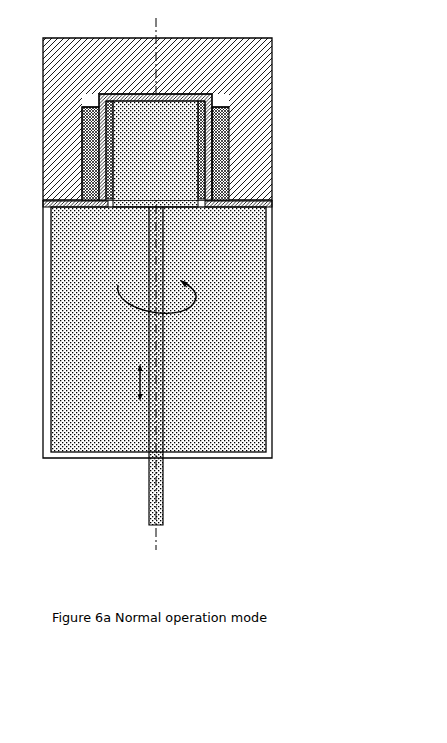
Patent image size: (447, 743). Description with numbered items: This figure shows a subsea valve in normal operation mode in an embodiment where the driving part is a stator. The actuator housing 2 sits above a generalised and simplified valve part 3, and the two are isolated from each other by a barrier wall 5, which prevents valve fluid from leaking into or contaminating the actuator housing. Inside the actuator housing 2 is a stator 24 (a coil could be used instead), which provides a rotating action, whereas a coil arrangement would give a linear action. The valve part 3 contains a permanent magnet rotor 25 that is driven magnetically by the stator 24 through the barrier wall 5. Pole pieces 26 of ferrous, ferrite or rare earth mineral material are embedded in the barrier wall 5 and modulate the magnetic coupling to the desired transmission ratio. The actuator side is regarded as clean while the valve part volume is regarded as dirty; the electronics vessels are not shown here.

The actuator housing 2 is at (272, 78).
The permanent magnet rotor 25 is at (230, 137).
The stator 24 is at (230, 152).
The barrier wall 5 is at (230, 167).
The pole pieces 26 is at (273, 203).
The valve part 3 is at (268, 405).